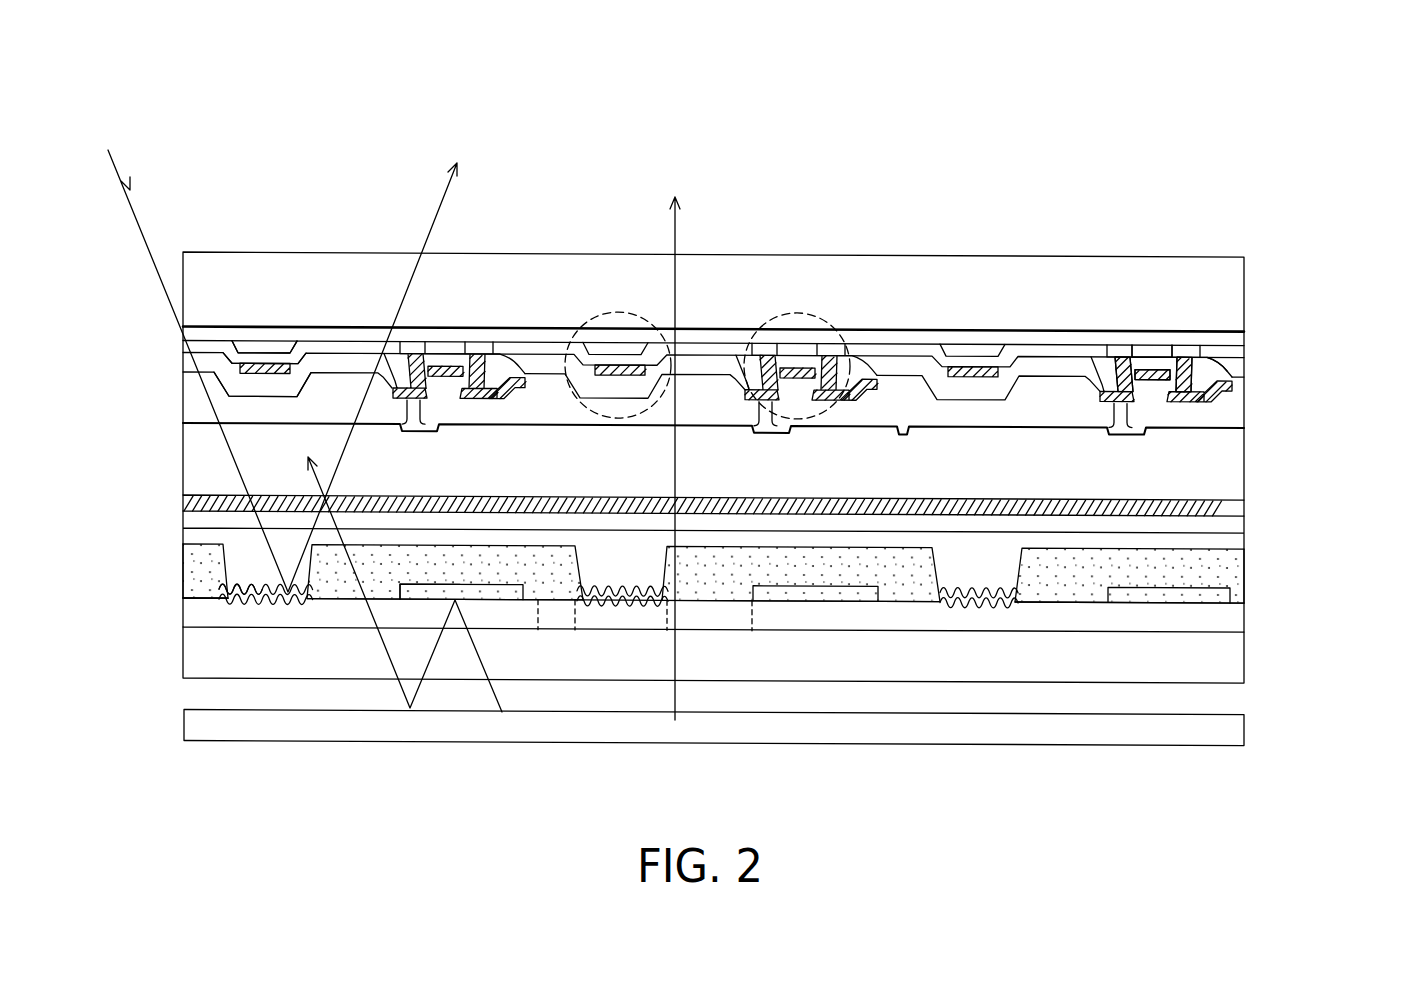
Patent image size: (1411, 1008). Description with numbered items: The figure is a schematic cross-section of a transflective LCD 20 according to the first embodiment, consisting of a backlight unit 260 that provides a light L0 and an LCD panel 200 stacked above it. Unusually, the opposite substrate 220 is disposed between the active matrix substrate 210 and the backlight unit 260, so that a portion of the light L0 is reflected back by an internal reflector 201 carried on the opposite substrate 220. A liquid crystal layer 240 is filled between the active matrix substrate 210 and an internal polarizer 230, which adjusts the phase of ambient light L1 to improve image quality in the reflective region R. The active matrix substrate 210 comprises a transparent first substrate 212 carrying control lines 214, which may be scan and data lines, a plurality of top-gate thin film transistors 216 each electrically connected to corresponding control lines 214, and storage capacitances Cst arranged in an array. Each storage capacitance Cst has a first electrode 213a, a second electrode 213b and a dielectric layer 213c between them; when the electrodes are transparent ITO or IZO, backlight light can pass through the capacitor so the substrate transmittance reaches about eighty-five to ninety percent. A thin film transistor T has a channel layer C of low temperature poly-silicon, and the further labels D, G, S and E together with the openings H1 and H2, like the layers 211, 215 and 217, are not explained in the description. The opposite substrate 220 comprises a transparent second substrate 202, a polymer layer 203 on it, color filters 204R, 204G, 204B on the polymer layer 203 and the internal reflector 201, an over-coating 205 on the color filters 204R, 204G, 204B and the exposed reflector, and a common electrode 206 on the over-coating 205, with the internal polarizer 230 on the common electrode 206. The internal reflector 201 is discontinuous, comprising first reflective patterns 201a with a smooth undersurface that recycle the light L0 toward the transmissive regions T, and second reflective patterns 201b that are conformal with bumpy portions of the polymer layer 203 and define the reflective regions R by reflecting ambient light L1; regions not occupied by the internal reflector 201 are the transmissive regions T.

The transflective LCD 20 is at (1231, 803).
The LCD panel 200 is at (1341, 333).
The internal reflector 201 is at (285, 796).
The first reflective patterns 201a is at (421, 593).
The second reflective patterns 201b is at (263, 600).
The second substrate 202 is at (200, 648).
The polymer layer 203 is at (200, 612).
The color filter 204R is at (461, 578).
The color filter 204G is at (815, 579).
The color filter 204B is at (1169, 580).
The over-coating 205 is at (185, 537).
The common electrode 206 is at (198, 517).
The active matrix substrate 210 is at (1271, 257).
The substrate 211 is at (200, 334).
The first substrate 212 is at (928, 287).
The first electrode 213a is at (236, 350).
The second electrode 213b is at (292, 370).
The dielectric layer 213c is at (280, 357).
The control lines 214 is at (867, 427).
The gate insulating layer 215 is at (195, 364).
The thin film transistor 216 is at (782, 124).
The planarization layer 217 is at (195, 403).
The opposite substrate 220 is at (1271, 518).
The internal polarizer 230 is at (1248, 509).
The liquid crystal layer 240 is at (1240, 468).
The backlight unit 260 is at (1245, 722).
The storage capacitance Cst is at (393, 164).
The transmissive region T is at (1192, 164).
The pixel electrode region E is at (703, 440).
The drain D is at (1117, 377).
The channel layer C is at (1140, 358).
The gate G is at (1155, 365).
The source S is at (1218, 378).
The first contact hole H1 is at (491, 360).
The second contact hole H2 is at (437, 411).
The reflective region R is at (665, 630).
The light L0 is at (493, 446).
The ambient light L1 is at (287, 357).